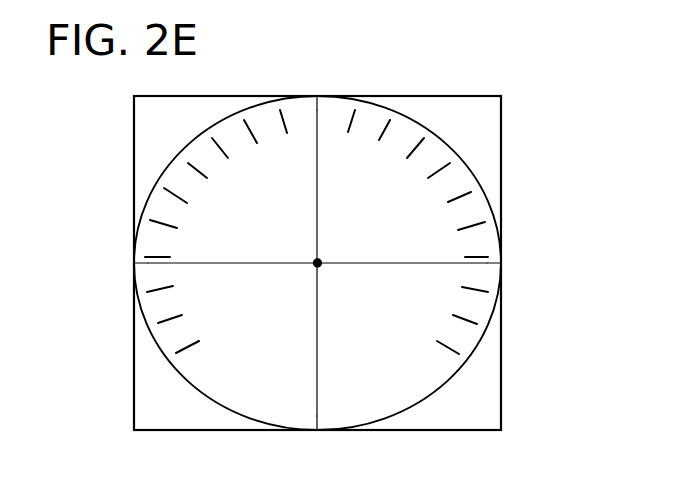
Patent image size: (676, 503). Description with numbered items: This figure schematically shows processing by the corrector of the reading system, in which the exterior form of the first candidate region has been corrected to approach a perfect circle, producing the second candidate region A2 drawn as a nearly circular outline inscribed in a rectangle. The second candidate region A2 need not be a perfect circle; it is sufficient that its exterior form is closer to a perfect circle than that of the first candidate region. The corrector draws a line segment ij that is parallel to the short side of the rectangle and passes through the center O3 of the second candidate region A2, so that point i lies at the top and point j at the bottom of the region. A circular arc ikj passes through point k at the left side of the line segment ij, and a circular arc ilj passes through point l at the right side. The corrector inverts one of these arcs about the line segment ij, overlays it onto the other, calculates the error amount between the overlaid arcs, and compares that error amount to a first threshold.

The center O3 is at (320, 262).
The second candidate region A2 is at (453, 150).
The point i is at (318, 87).
The point j is at (315, 437).
The point k is at (131, 264).
The point l is at (502, 264).